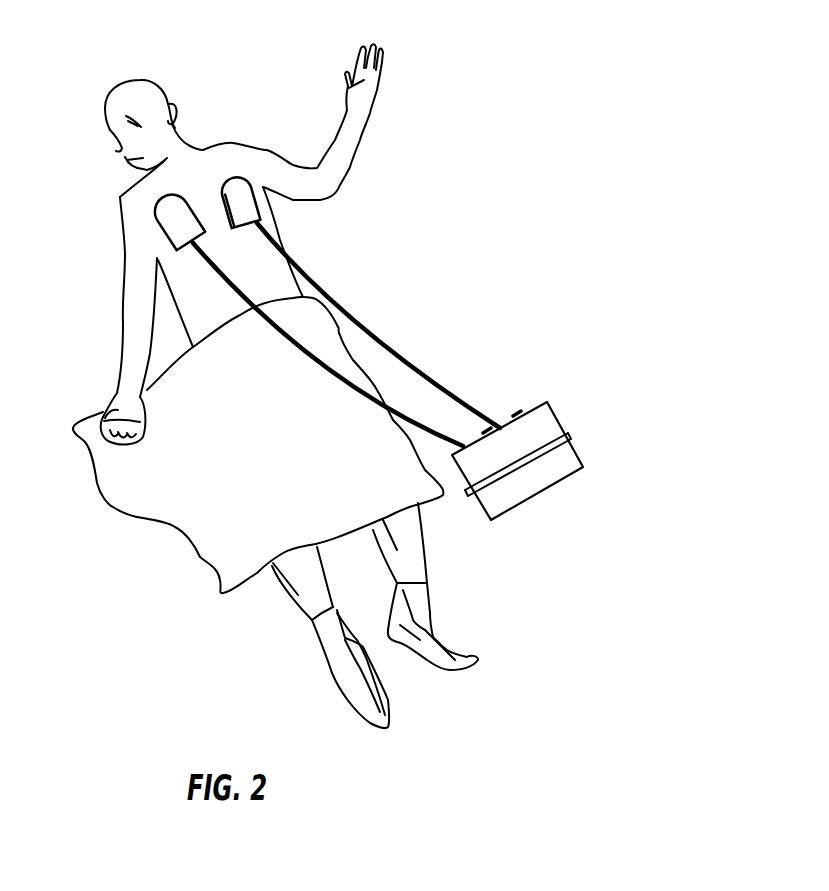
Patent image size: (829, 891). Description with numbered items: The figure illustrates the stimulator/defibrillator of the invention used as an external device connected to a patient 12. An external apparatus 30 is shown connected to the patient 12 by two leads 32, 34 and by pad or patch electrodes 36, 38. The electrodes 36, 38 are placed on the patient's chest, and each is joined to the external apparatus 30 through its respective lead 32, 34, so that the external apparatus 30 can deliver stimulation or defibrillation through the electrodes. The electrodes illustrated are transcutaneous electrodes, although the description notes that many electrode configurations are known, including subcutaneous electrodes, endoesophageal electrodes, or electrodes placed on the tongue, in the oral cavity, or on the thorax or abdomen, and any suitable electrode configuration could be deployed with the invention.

The patient 12 is at (247, 144).
The external apparatus 30 is at (542, 420).
The lead 32 is at (331, 372).
The lead 34 is at (420, 374).
The pad or patch electrode 36 is at (173, 217).
The pad or patch electrode 38 is at (250, 203).